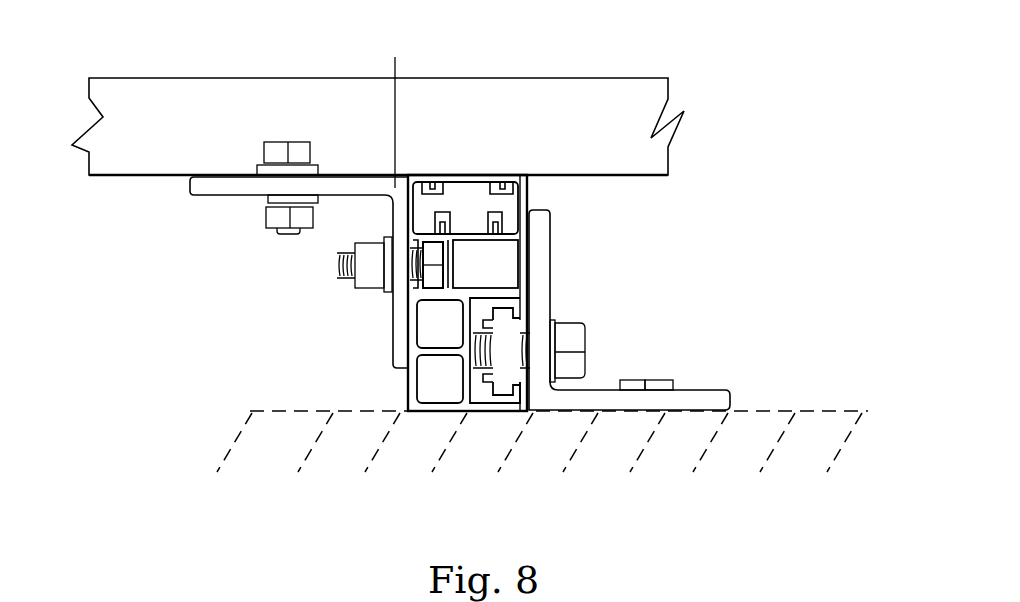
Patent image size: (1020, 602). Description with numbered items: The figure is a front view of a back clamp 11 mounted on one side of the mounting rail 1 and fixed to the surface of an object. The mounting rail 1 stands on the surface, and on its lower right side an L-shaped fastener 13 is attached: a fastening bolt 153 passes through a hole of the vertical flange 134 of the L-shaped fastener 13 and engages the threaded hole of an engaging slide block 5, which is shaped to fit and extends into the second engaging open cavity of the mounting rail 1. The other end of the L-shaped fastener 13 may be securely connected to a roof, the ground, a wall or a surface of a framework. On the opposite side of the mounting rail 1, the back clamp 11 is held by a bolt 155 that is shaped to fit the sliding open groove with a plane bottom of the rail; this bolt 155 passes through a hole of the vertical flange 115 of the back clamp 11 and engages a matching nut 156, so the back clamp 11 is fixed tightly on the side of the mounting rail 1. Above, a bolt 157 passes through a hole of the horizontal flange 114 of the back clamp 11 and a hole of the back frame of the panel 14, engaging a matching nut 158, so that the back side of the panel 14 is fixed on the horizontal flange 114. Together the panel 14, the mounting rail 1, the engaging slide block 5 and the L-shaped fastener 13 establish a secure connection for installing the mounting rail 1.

The mounting rail 1 is at (490, 272).
The engaging slide block 5 is at (510, 305).
The back clamp 11 is at (394, 112).
The L-shaped fastener 13 is at (688, 398).
The panel 14 is at (412, 122).
The horizontal flange 114 is at (368, 187).
The vertical flange 115 is at (398, 327).
The vertical flange 134 is at (537, 273).
The fastening bolt 153 is at (570, 363).
The bolt 155 is at (433, 280).
The matching nut 156 is at (373, 270).
The bolt 157 is at (278, 152).
The matching nut 158 is at (277, 219).